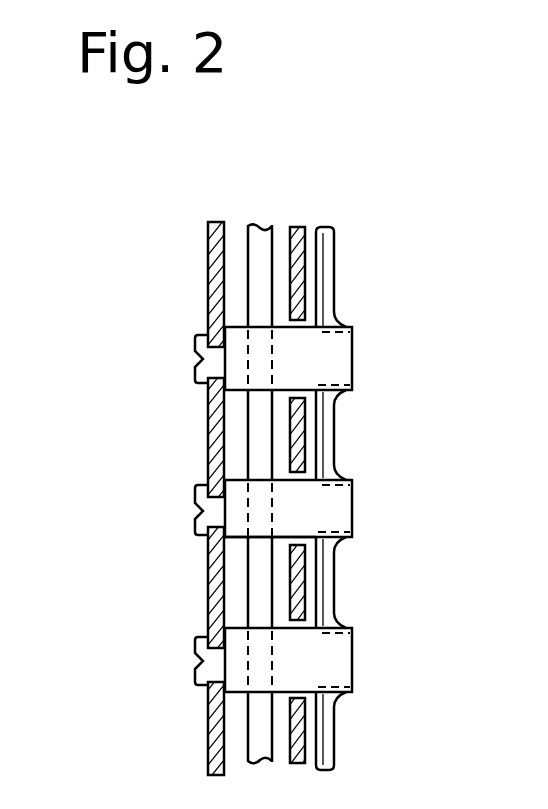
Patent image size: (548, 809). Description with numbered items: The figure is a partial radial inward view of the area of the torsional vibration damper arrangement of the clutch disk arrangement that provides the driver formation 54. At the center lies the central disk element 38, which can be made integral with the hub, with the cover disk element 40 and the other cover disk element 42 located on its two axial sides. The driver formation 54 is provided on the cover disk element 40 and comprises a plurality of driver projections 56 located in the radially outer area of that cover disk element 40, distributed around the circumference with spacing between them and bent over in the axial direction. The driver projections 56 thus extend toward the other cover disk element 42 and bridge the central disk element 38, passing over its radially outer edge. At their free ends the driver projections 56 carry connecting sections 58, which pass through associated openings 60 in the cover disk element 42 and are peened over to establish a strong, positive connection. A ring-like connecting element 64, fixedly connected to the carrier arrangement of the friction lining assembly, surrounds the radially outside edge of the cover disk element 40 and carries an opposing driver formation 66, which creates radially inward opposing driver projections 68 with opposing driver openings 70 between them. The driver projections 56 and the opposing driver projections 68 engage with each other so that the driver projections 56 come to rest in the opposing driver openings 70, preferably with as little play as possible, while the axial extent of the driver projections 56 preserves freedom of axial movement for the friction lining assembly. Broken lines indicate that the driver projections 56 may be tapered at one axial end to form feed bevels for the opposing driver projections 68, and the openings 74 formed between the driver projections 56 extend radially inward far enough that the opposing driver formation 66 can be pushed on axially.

The central disk element 38 is at (254, 226).
The cover disk element 40 is at (337, 453).
The cover disk element 42 is at (207, 440).
The driver formation 54 is at (360, 730).
The driver projections 56 is at (294, 353).
The connecting sections 58 is at (213, 663).
The openings 60 is at (207, 368).
The ring-like connecting element 64 is at (300, 228).
The opposing driver formation 66 is at (303, 437).
The opposing driver projections 68 is at (308, 572).
The opposing driver openings 70 is at (303, 541).
The openings 74 is at (337, 597).